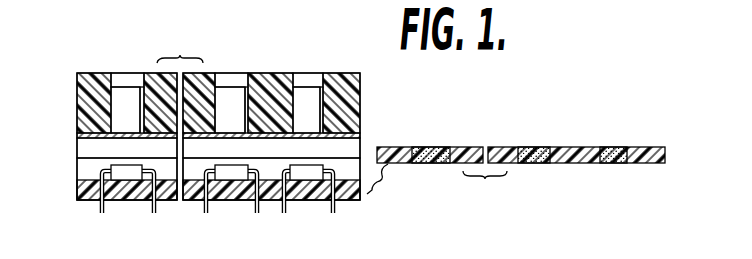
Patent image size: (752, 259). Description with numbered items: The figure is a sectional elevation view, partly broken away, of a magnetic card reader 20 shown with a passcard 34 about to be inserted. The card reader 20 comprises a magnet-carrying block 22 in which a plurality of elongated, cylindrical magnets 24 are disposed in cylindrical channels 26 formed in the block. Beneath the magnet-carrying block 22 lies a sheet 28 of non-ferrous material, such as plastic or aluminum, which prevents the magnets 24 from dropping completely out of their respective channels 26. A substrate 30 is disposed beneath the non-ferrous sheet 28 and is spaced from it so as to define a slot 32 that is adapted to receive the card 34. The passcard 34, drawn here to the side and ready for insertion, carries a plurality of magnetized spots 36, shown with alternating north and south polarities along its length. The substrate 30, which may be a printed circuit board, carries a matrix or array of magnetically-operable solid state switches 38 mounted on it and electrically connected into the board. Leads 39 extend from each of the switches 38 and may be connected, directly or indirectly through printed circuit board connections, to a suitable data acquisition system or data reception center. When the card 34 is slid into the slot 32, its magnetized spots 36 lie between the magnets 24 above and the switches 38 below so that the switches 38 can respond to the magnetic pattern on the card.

The card reader 20 is at (66, 179).
The magnet-carrying block 22 is at (80, 97).
The cylindrical magnet 24 is at (122, 85).
The cylindrical channel 26 is at (139, 84).
The sheet of non-ferrous material 28 is at (361, 134).
The substrate 30 is at (359, 196).
The slot 32 is at (352, 149).
The passcard 34 is at (648, 148).
The magnetized spot 36 is at (600, 148).
The magnetically-operable solid state switch 38 is at (127, 172).
The lead 39 is at (200, 208).